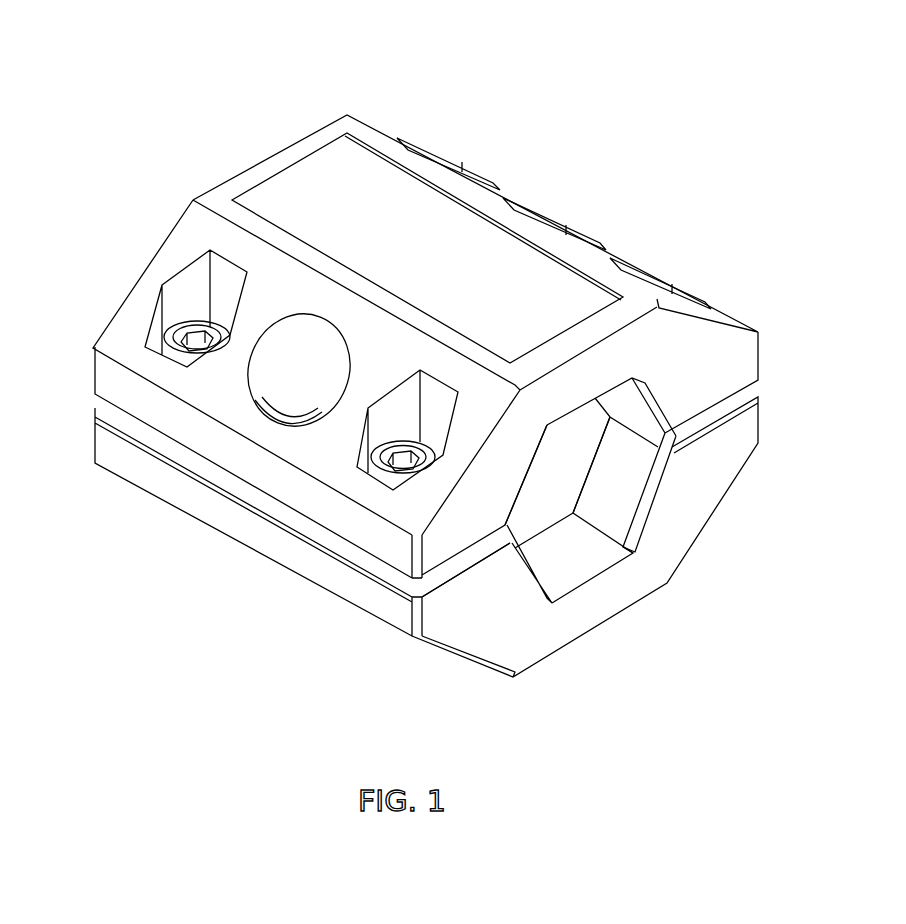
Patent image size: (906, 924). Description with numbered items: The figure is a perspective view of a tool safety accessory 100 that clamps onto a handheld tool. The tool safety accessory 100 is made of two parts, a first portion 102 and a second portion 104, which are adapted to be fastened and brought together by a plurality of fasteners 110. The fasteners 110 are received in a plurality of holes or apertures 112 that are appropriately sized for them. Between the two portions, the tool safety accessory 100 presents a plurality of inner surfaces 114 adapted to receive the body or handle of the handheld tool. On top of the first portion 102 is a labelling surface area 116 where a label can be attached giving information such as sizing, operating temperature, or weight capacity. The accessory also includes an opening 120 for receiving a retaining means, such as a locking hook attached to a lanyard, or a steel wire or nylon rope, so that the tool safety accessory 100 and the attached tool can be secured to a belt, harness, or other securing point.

The tool safety accessory 100 is at (413, 407).
The first portion 102 is at (404, 332).
The second portion 104 is at (435, 484).
The fasteners 110 is at (173, 328).
The holes or apertures 112 is at (450, 157).
The inner surfaces 114 is at (623, 397).
The labelling surface area 116 is at (340, 180).
The opening 120 is at (297, 375).